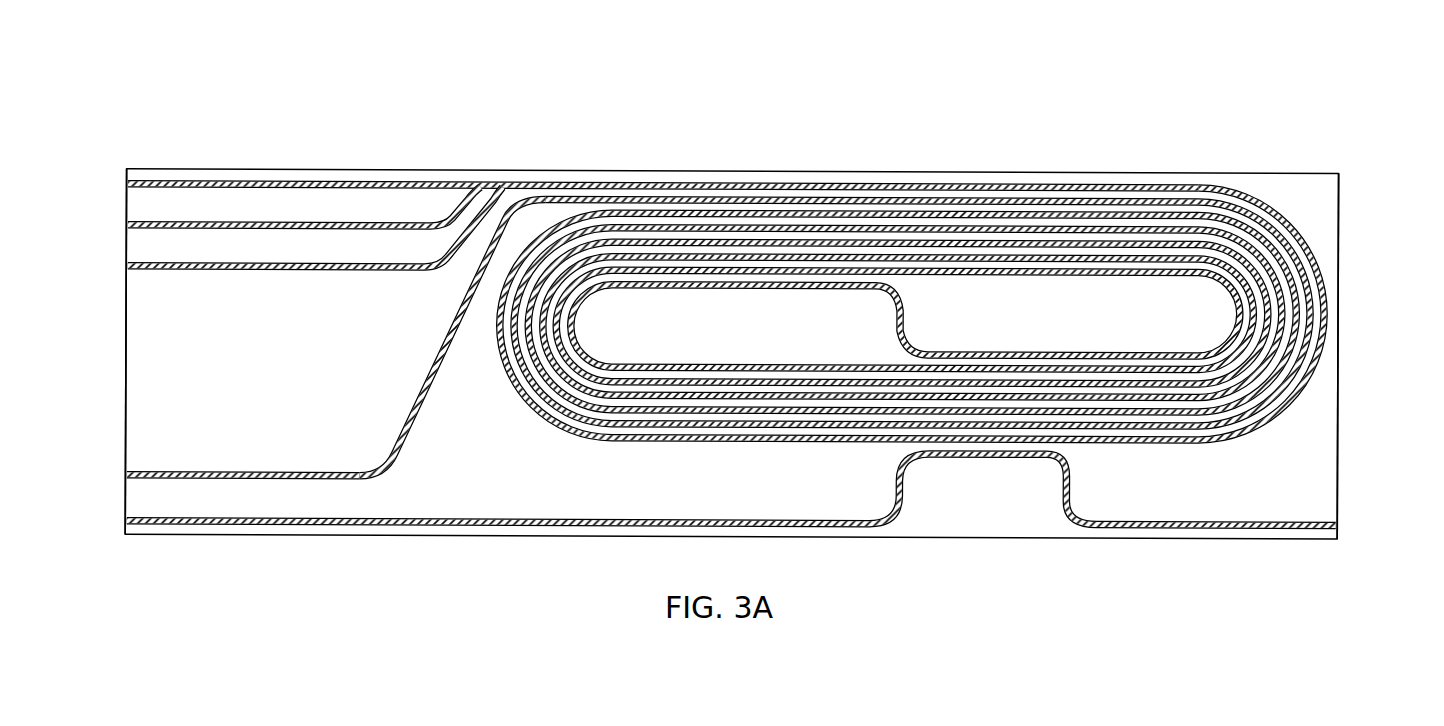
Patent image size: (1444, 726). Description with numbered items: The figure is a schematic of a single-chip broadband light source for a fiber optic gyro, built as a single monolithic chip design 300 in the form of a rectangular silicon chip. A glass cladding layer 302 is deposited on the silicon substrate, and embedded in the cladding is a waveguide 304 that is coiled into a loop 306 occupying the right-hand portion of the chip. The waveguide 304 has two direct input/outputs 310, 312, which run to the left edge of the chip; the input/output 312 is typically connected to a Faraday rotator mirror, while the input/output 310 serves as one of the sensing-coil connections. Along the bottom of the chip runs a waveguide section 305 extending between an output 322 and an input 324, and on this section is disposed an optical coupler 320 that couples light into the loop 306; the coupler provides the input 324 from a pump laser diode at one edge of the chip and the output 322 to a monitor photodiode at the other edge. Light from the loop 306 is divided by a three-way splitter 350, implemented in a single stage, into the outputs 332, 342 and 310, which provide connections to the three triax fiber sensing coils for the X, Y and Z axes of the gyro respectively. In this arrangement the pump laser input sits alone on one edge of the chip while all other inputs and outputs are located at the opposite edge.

The single monolithic chip design 300 is at (775, 325).
The glass cladding layer 302 is at (1303, 195).
The waveguide 304 is at (752, 181).
The waveguide section 305 is at (1257, 527).
The loop 306 is at (1079, 351).
The input/output 310 is at (222, 181).
The input/output 312 is at (257, 481).
The optical coupler 320 is at (972, 438).
The output 322 is at (143, 527).
The input 324 is at (1334, 524).
The output 332 is at (259, 224).
The output 342 is at (331, 264).
The three-way splitter 350 is at (500, 190).